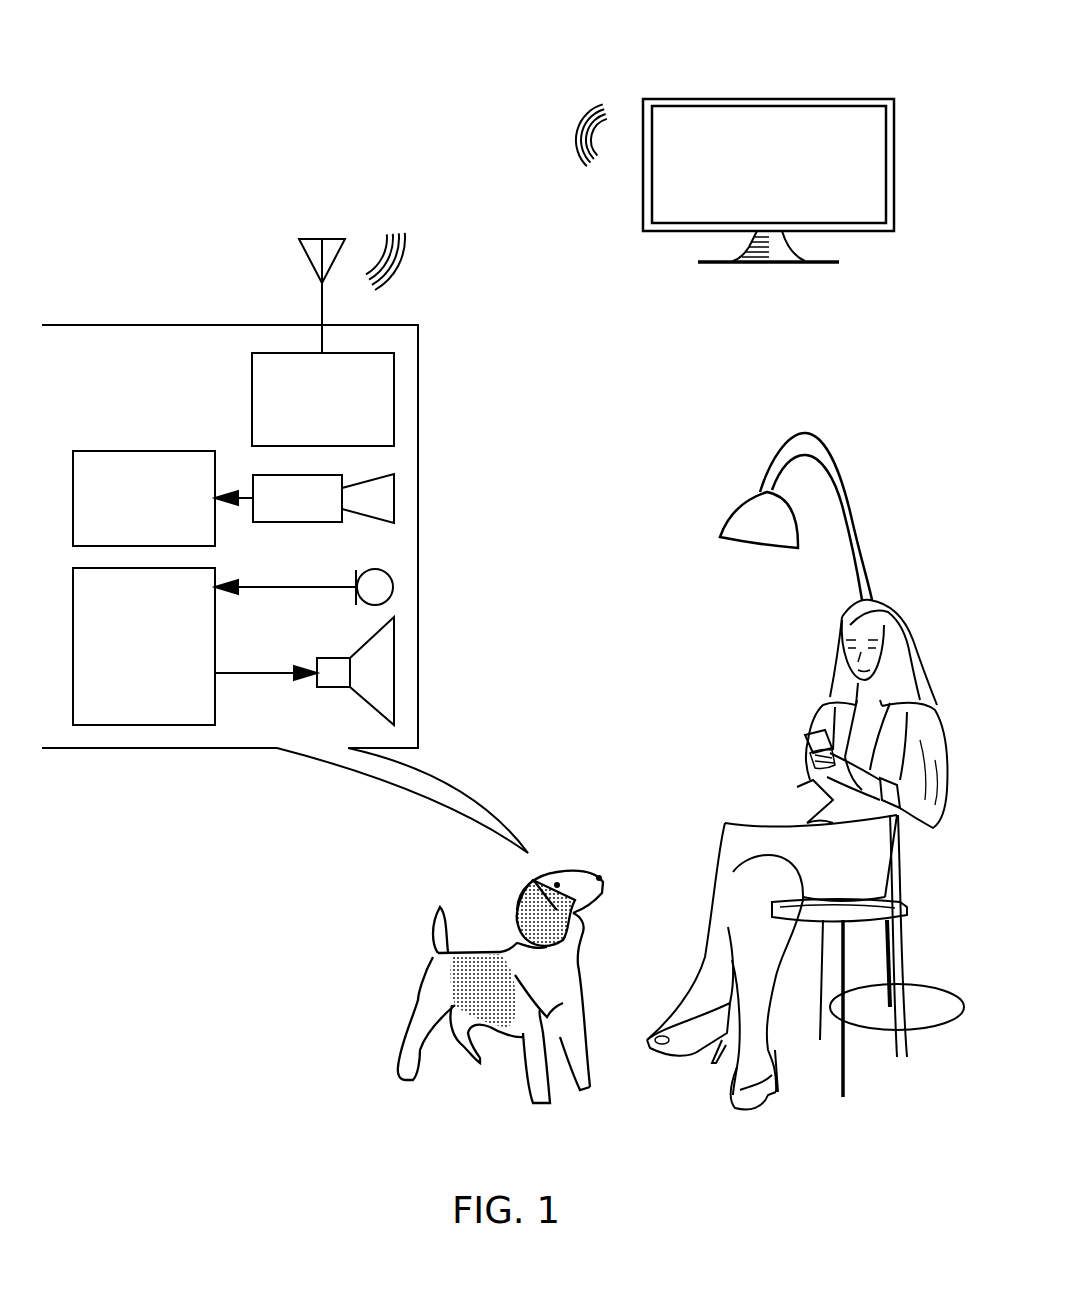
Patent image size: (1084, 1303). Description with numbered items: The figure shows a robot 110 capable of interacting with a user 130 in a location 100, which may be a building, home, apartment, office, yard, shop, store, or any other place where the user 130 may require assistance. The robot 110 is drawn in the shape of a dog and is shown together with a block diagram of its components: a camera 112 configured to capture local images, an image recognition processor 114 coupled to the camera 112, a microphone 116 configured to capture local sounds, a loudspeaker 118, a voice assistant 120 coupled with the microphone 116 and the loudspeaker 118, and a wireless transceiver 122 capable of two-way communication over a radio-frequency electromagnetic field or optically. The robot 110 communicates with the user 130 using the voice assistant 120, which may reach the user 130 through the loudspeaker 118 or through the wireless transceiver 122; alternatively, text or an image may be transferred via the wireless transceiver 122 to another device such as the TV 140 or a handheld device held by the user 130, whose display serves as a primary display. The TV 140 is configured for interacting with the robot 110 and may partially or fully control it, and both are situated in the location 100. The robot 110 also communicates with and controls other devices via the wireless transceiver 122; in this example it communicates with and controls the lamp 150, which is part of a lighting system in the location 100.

The location 100 is at (147, 133).
The robot 110 is at (512, 893).
The camera 112 is at (304, 498).
The image recognition processor 114 is at (144, 498).
The microphone 116 is at (398, 582).
The loudspeaker 118 is at (304, 671).
The voice assistant 120 is at (144, 646).
The wireless transceiver 122 is at (323, 399).
The user 130 is at (808, 700).
The TV 140 is at (847, 83).
The lamp 150 is at (750, 510).